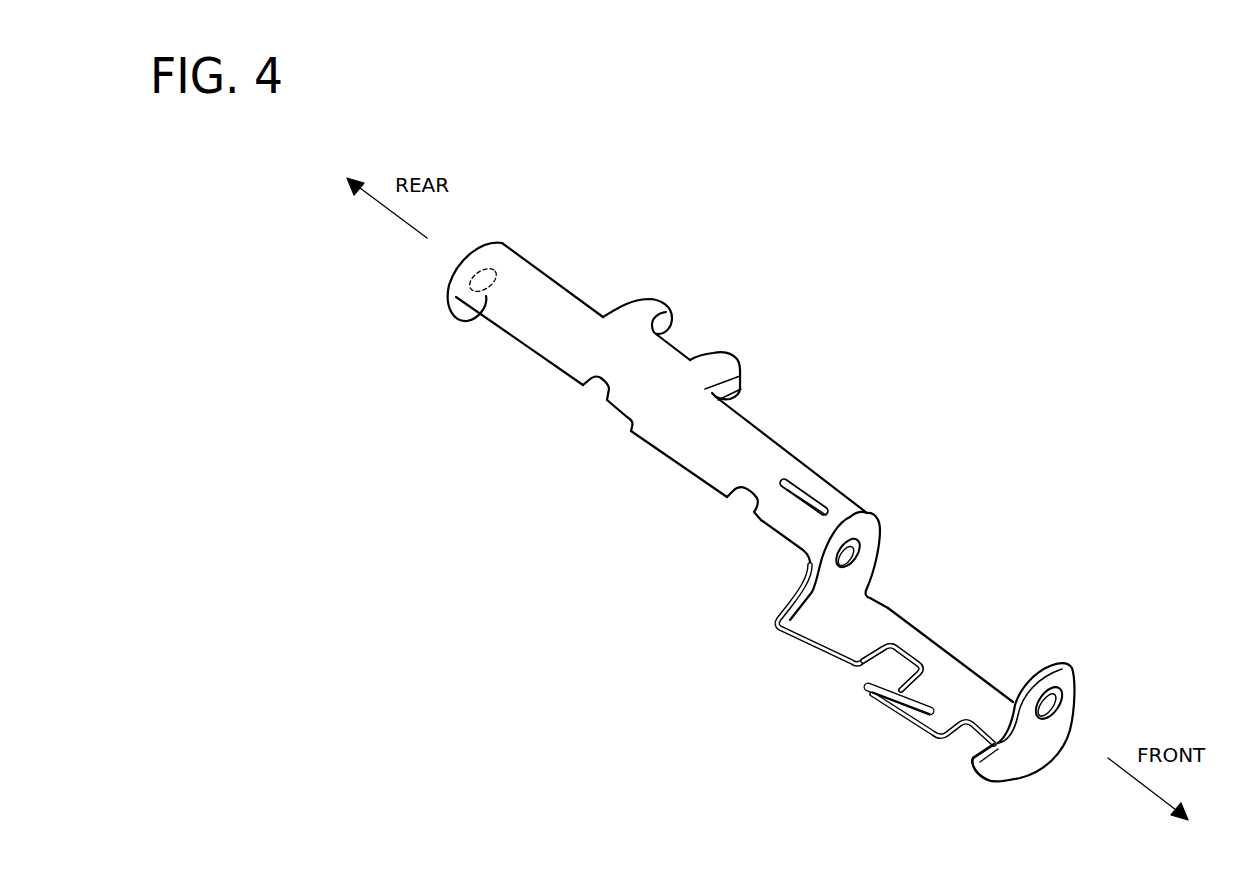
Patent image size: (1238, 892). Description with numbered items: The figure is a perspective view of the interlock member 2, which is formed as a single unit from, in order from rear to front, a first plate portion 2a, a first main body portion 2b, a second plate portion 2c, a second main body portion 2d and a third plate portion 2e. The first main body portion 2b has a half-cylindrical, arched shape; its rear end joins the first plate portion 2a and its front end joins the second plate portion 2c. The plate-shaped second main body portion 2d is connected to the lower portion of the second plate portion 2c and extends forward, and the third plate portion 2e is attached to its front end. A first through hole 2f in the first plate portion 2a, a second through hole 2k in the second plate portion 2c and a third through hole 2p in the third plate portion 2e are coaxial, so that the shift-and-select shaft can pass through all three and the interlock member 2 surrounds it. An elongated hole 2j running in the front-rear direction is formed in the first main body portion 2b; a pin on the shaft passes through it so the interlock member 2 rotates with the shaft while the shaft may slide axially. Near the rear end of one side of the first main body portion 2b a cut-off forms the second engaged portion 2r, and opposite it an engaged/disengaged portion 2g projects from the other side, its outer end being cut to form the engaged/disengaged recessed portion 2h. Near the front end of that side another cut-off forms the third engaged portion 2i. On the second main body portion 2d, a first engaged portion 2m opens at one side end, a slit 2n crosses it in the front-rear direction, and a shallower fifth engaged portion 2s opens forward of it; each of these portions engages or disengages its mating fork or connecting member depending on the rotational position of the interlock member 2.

The interlock member 2 is at (826, 198).
The first plate portion 2a is at (466, 321).
The first main body portion 2b is at (561, 303).
The second plate portion 2c is at (863, 566).
The second main body portion 2d is at (949, 663).
The third plate portion 2e is at (1057, 680).
The first through hole 2f is at (477, 272).
The engaged/disengaged portion 2g is at (660, 315).
The engaged/disengaged recessed portion 2h is at (690, 348).
The third engaged portion 2i is at (738, 492).
The elongated hole 2j is at (798, 488).
The second through hole 2k is at (847, 540).
The first engaged portion 2m is at (882, 667).
The slit 2n is at (900, 710).
The third through hole 2p is at (1052, 703).
The second engaged portion 2r is at (594, 382).
The fifth engaged portion 2s is at (966, 745).